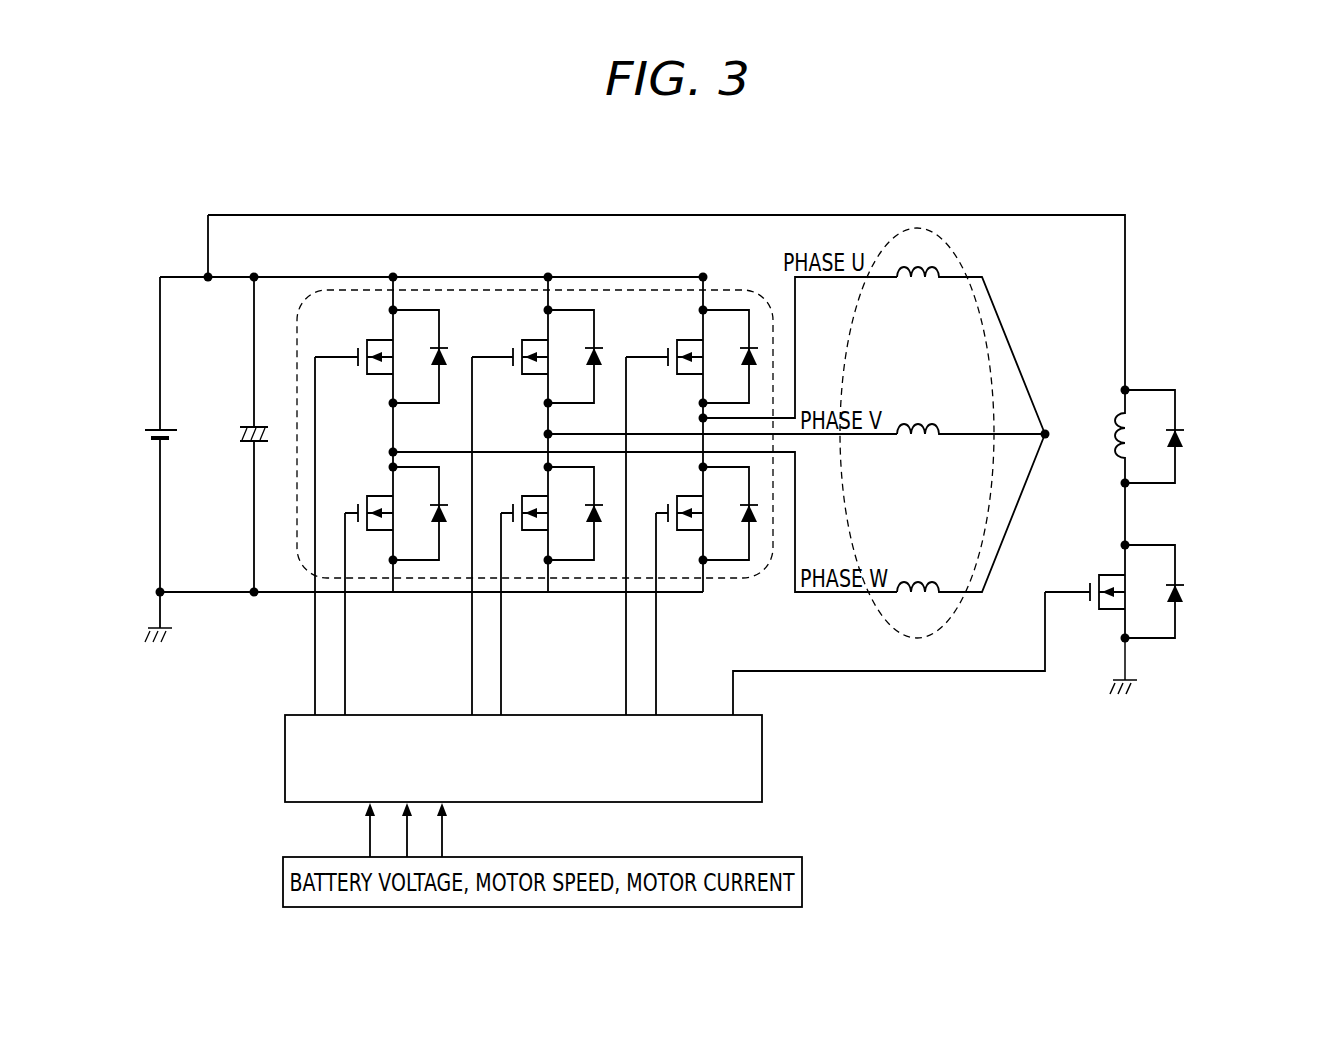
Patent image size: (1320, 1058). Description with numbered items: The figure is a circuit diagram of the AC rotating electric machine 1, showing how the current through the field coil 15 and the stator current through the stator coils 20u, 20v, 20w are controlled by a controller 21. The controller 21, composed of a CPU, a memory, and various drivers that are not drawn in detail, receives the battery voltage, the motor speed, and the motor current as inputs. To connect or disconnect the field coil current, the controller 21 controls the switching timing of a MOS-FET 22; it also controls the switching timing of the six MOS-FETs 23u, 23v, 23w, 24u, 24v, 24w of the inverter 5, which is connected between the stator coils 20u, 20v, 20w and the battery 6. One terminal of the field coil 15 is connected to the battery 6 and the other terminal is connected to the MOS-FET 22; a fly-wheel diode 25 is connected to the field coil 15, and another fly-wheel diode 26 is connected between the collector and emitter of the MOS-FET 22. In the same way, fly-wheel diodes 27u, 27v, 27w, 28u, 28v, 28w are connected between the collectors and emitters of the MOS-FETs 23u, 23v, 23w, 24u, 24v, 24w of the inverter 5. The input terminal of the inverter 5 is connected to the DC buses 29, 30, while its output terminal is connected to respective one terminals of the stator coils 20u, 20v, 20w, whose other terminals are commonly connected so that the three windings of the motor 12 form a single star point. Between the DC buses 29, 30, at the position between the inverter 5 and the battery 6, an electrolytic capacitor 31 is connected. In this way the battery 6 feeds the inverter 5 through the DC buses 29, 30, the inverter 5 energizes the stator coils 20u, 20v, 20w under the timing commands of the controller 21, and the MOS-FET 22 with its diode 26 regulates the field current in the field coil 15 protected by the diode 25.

The motor drive system 1 is at (1048, 156).
The inverter 5 is at (497, 290).
The battery 6 is at (152, 422).
The motor 12 is at (945, 405).
The field coil 15 is at (1140, 415).
The stator coil 20u is at (917, 290).
The stator coil 20v is at (917, 447).
The stator coil 20w is at (935, 605).
The controller 21 is at (762, 755).
The MOS-FET 22 is at (1103, 625).
The MOS-FET 23u is at (668, 335).
The MOS-FET 23v is at (513, 335).
The MOS-FET 23w is at (358, 335).
The MOS-FET 24u is at (682, 540).
The MOS-FET 24v is at (527, 540).
The MOS-FET 24w is at (372, 540).
The fly-wheel diode 25 is at (1200, 433).
The fly-wheel diode 26 is at (1200, 593).
The fly-wheel diode 27u is at (764, 338).
The fly-wheel diode 27v is at (603, 338).
The fly-wheel diode 27w is at (448, 338).
The fly-wheel diode 28u is at (758, 535).
The fly-wheel diode 28v is at (603, 535).
The fly-wheel diode 28w is at (448, 535).
The DC bus 29 is at (275, 276).
The DC bus 30 is at (270, 596).
The electrolytic capacitor 31 is at (244, 450).